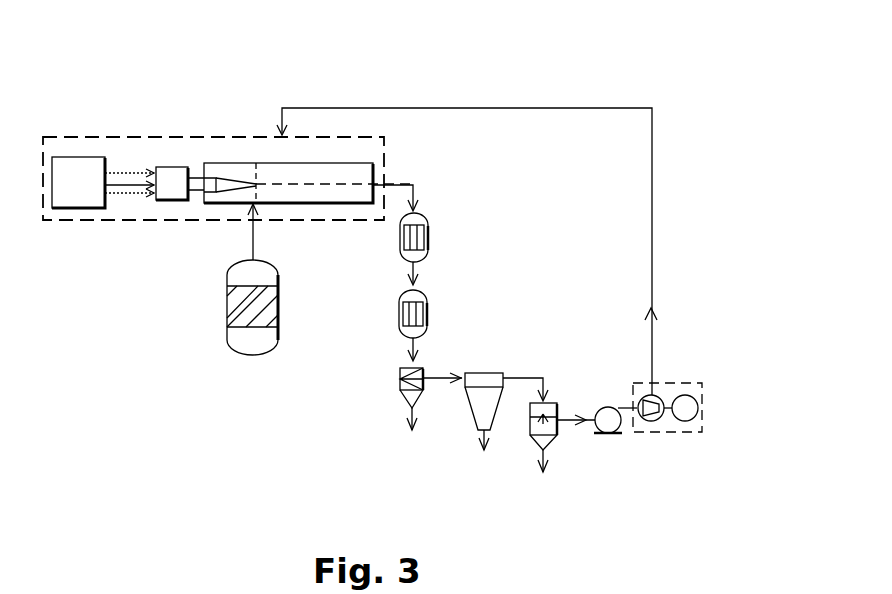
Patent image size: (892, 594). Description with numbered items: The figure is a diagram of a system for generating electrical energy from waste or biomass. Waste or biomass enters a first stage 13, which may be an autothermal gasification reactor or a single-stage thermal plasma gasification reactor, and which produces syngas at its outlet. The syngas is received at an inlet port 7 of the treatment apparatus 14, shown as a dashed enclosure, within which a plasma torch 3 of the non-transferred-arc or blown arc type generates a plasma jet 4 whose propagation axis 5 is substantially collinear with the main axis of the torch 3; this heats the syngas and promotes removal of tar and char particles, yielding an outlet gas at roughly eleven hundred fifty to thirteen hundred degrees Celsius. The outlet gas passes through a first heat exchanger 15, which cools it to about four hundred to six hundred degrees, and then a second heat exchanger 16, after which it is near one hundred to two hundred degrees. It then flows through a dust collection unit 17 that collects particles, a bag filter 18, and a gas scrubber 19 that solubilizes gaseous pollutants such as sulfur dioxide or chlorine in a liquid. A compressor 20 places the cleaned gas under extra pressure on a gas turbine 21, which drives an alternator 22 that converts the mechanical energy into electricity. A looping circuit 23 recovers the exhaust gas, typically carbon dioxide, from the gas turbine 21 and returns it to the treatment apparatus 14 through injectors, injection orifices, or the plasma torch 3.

The plasma torch 3 is at (172, 167).
The plasma jet 4 is at (225, 178).
The propagation axis 5 is at (340, 185).
The inlet port 7 is at (253, 240).
The first stage 13 is at (278, 335).
The treatment apparatus 14 is at (78, 137).
The first heat exchanger 15 is at (428, 235).
The second heat exchanger 16 is at (427, 315).
The dust collection unit 17 is at (400, 385).
The bag filter 18 is at (485, 373).
The gas scrubber 19 is at (557, 445).
The compressor 20 is at (608, 433).
The gas turbine 21 is at (651, 421).
The alternator 22 is at (686, 395).
The looping circuit 23 is at (613, 108).